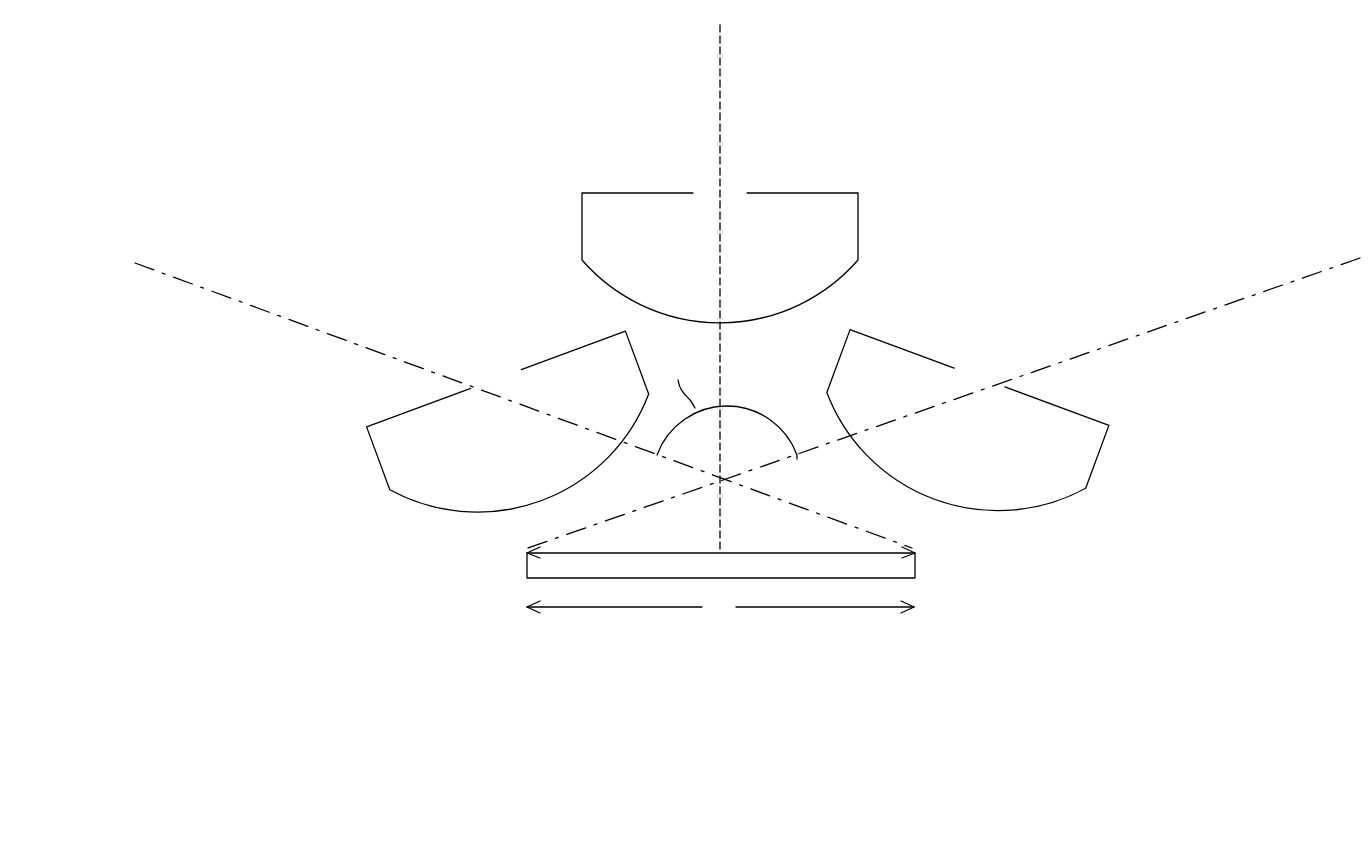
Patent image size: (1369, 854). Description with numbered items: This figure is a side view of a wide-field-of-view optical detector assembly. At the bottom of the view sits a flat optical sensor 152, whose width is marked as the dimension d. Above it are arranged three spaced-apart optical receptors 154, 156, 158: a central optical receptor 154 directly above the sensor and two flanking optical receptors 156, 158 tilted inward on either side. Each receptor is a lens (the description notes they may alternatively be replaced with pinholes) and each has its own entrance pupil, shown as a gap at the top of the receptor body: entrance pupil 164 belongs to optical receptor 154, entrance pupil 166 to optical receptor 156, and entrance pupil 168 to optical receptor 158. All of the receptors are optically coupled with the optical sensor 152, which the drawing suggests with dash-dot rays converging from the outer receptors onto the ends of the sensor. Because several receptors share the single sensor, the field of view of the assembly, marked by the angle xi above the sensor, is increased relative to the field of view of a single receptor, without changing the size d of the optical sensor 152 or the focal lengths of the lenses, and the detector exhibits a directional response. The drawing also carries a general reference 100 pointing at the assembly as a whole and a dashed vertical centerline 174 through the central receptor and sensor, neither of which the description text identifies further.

The optical system 100 is at (957, 137).
The optical sensor 152 is at (915, 563).
The optical receptor 154 is at (858, 220).
The optical receptor 156 is at (1100, 455).
The optical receptor 158 is at (375, 452).
The entrance pupil 164 is at (732, 193).
The entrance pupil 166 is at (978, 365).
The entrance pupil 168 is at (497, 378).
The optical axis 174 is at (718, 53).